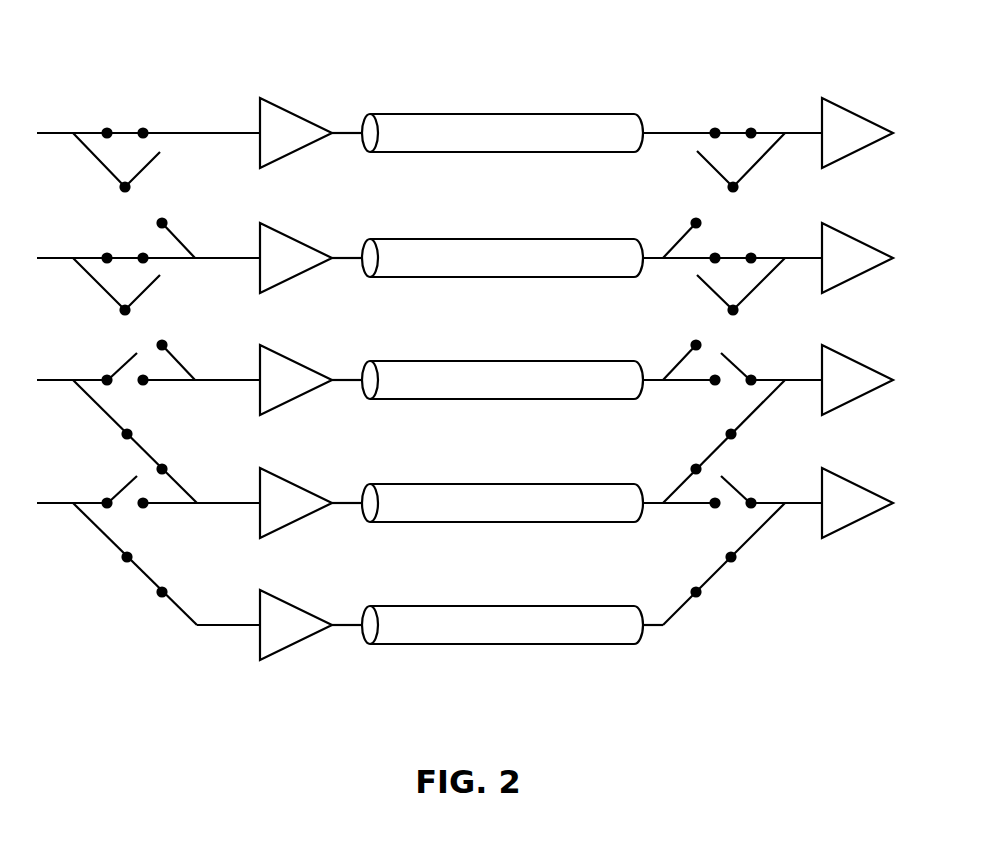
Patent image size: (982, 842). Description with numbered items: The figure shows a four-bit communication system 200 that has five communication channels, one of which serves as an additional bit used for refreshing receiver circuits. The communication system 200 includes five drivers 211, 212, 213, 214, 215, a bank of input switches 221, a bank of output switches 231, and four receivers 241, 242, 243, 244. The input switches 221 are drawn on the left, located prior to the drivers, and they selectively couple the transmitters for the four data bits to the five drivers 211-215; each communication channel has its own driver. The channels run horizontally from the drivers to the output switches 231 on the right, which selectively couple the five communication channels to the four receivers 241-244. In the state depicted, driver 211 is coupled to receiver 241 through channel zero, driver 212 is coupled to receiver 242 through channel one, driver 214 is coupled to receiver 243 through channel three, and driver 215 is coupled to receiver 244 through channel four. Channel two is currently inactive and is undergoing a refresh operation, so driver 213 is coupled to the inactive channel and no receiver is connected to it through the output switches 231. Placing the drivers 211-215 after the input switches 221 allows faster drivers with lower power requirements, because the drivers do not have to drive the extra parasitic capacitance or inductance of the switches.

The communication system 200 is at (616, 54).
The driver 211 is at (296, 133).
The driver 212 is at (296, 258).
The driver 213 is at (296, 380).
The driver 214 is at (296, 503).
The driver 215 is at (296, 625).
The input switches 221 is at (73, 660).
The output switches 231 is at (662, 660).
The receiver 241 is at (857, 133).
The receiver 242 is at (857, 258).
The receiver 243 is at (857, 380).
The receiver 244 is at (857, 503).